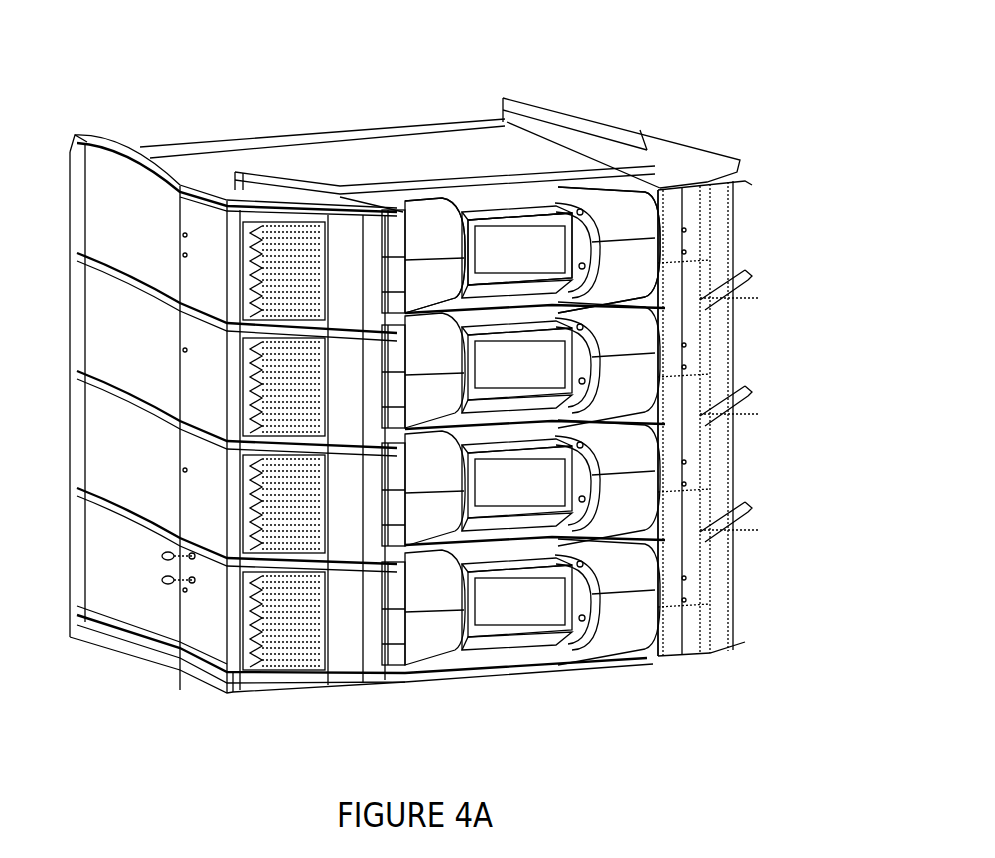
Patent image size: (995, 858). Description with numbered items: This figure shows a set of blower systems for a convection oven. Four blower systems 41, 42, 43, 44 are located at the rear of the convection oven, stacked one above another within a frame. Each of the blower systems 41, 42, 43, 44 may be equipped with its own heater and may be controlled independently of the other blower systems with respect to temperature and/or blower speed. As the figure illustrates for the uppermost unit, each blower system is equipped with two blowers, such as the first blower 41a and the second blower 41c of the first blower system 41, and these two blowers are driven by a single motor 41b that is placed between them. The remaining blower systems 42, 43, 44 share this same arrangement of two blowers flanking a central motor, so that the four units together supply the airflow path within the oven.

The blower system 41 is at (590, 161).
The blower 41a is at (433, 224).
The motor 41b is at (515, 240).
The blower 41c is at (610, 196).
The blower system 42 is at (650, 341).
The blower system 43 is at (650, 461).
The blower system 44 is at (640, 615).